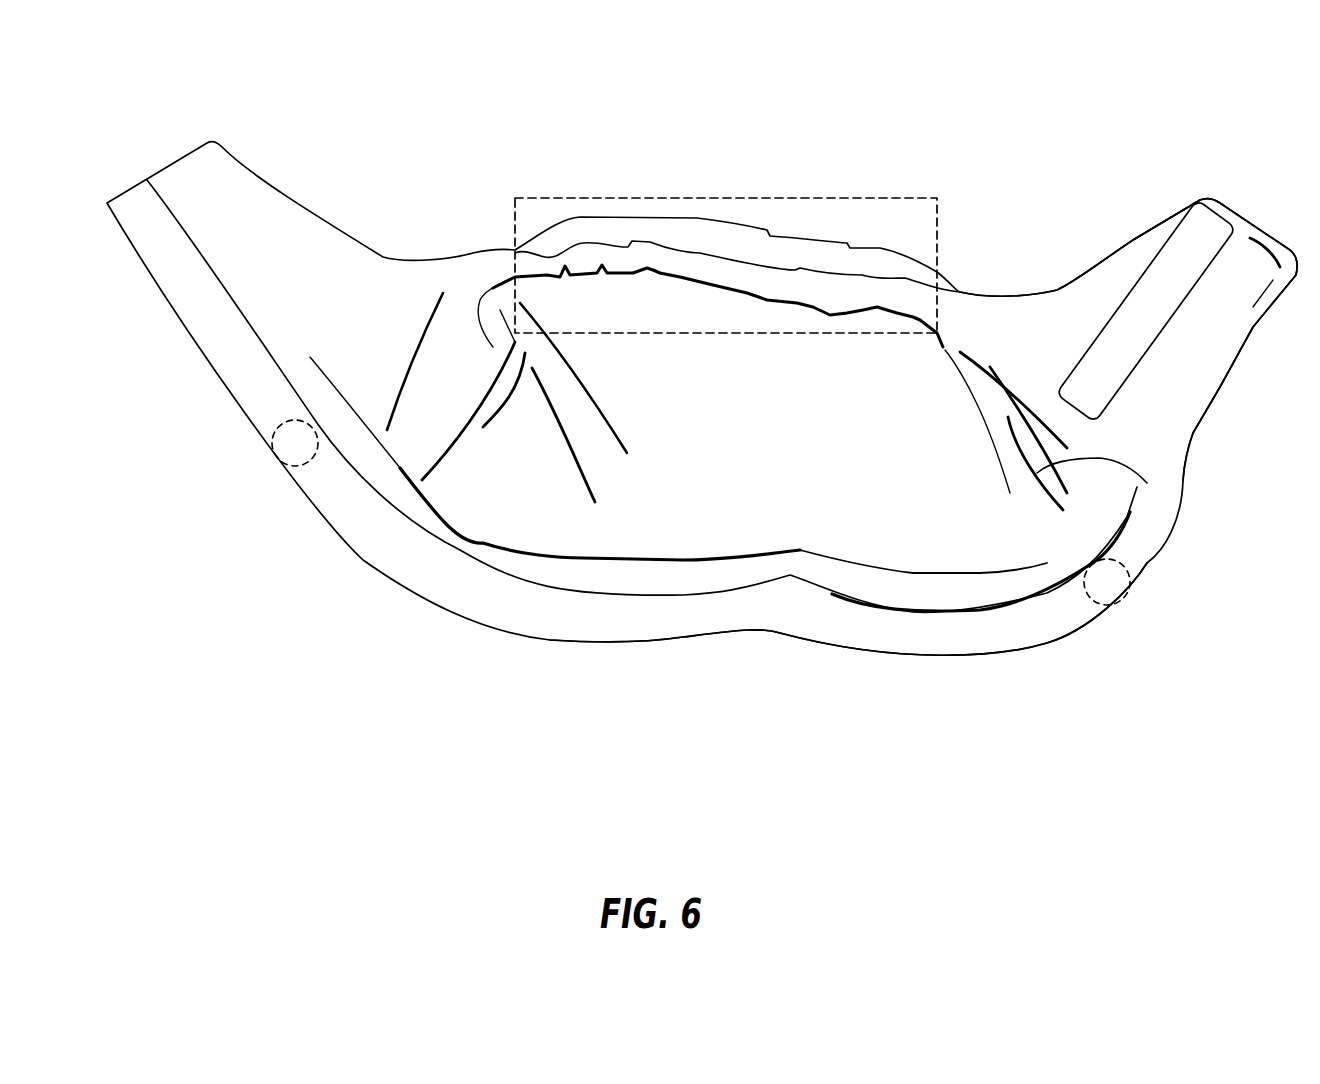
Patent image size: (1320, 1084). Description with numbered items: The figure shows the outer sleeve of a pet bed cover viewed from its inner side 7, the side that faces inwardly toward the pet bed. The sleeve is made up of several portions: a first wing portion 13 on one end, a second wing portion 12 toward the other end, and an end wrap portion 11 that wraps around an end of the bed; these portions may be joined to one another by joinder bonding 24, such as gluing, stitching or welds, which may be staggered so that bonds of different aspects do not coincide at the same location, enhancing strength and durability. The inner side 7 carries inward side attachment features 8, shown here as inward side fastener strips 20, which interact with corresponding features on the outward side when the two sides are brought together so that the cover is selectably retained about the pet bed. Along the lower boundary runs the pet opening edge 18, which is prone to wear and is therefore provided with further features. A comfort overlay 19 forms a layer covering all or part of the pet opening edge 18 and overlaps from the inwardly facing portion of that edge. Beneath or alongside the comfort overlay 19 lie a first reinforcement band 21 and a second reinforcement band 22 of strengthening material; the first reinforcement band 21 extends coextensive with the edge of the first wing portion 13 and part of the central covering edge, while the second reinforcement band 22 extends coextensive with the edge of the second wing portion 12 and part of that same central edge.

The inner side 7 is at (935, 120).
The inward side attachment features 8 is at (1124, 130).
The end wrap portion 11 is at (513, 203).
The second wing portion 12 is at (1097, 307).
The first wing portion 13 is at (290, 270).
The pet opening edge 18 is at (690, 640).
The comfort overlay 19 is at (1030, 627).
The inward side fastener strips 20 is at (1190, 237).
The first reinforcement band 21 is at (300, 443).
The second reinforcement band 22 is at (1107, 583).
The joinder bonding 24 is at (1147, 483).